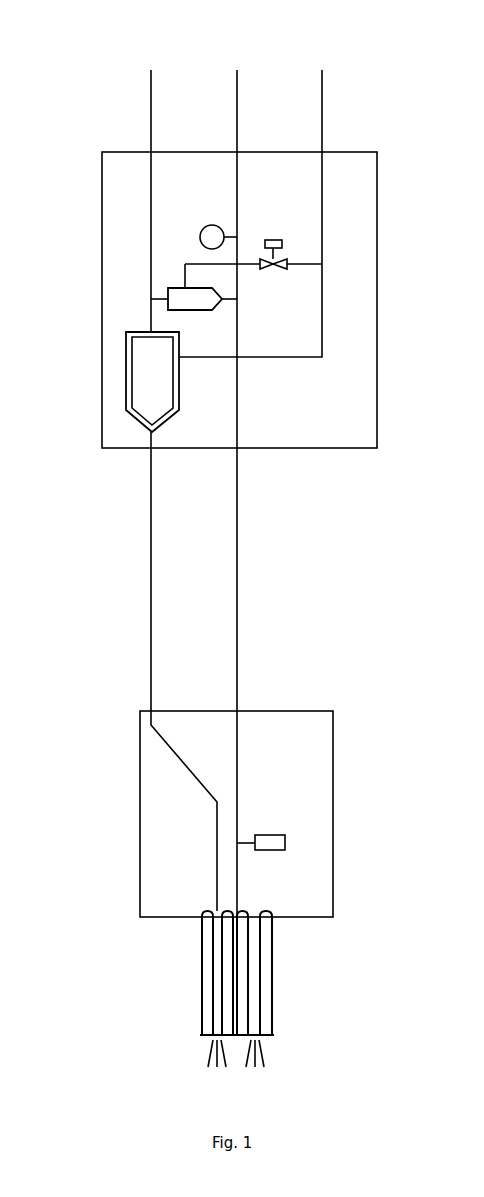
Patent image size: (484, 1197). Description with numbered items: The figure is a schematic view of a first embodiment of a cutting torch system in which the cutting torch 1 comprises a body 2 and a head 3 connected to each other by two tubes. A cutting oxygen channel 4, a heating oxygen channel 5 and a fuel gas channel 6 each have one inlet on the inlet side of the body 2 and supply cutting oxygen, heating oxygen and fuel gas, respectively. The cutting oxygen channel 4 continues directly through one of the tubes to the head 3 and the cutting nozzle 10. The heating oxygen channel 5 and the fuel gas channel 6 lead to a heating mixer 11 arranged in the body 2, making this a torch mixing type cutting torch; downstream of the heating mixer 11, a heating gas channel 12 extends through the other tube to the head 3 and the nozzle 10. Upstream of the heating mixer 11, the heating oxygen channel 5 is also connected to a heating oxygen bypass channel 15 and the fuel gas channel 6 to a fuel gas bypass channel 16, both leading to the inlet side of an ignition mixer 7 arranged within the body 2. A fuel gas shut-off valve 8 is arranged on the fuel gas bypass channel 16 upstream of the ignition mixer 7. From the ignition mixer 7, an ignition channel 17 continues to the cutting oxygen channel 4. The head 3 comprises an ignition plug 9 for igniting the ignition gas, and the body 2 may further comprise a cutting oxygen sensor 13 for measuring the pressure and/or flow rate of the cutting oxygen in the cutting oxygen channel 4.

The cutting torch 1 is at (415, 137).
The body 2 is at (342, 413).
The head 3 is at (318, 740).
The cutting oxygen channel 4 is at (237, 61).
The heating oxygen channel 5 is at (151, 61).
The fuel gas channel 6 is at (322, 61).
The ignition mixer 7 is at (183, 300).
The fuel gas shut-off valve 8 is at (286, 248).
The ignition plug 9 is at (279, 833).
The nozzle 10 is at (245, 1008).
The heating mixer 11 is at (147, 373).
The heating gas channel 12 is at (140, 632).
The cutting oxygen sensor 13 is at (212, 223).
The heating oxygen bypass channel 15 is at (161, 301).
The fuel gas bypass channel 16 is at (303, 268).
The ignition channel 17 is at (232, 303).